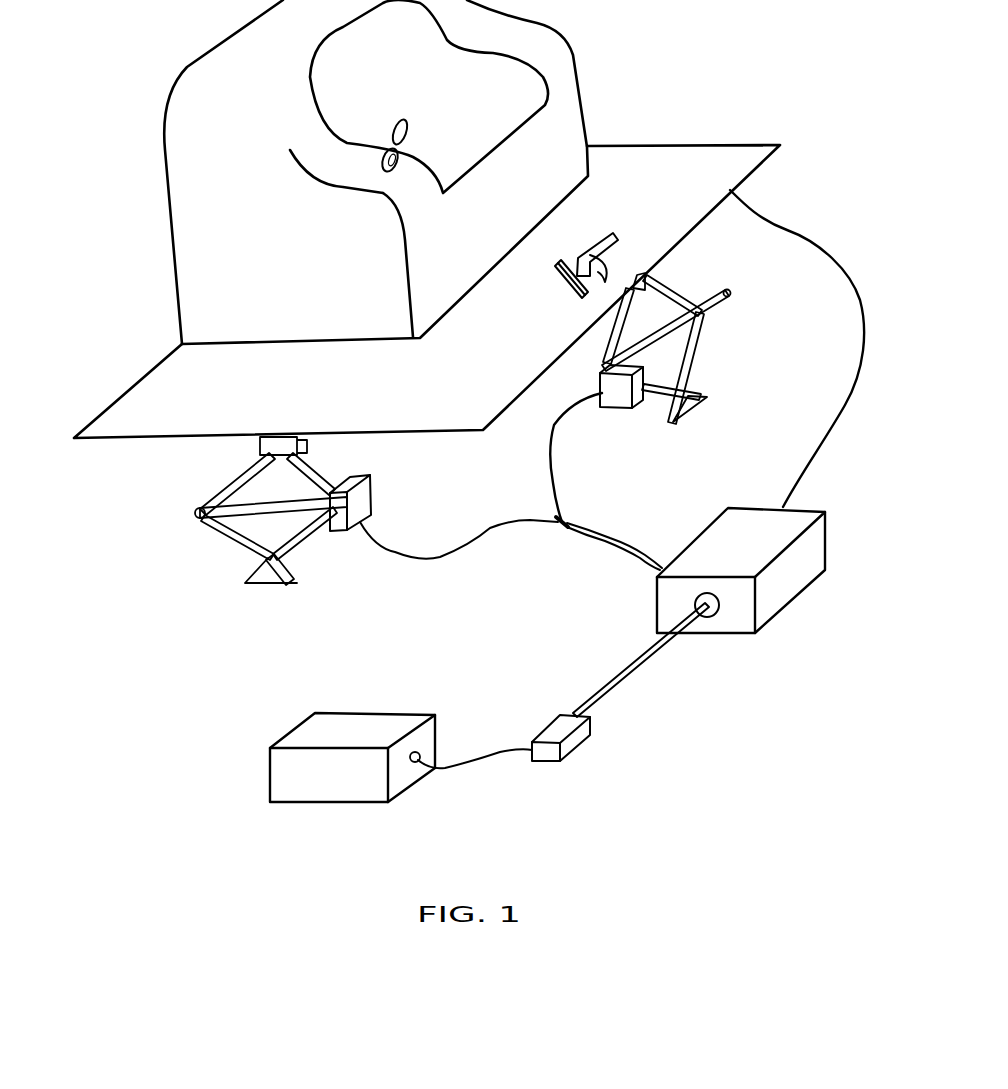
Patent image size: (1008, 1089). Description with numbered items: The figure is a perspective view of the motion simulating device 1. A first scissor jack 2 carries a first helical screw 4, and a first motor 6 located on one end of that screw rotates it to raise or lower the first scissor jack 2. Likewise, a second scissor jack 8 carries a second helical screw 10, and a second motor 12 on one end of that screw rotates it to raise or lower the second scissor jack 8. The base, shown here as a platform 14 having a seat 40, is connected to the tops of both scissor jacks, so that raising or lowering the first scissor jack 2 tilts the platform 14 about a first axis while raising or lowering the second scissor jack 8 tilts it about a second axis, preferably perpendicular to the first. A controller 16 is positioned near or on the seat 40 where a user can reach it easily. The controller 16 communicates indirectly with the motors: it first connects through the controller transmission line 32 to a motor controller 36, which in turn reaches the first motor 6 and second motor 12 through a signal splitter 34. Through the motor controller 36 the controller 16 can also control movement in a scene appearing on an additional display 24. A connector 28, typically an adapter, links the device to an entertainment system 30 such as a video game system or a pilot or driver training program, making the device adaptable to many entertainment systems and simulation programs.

The motion simulating device 1 is at (97, 152).
The first scissor jack 2 is at (280, 515).
The first helical screw 4 is at (288, 514).
The first motor 6 is at (363, 503).
The second scissor jack 8 is at (689, 366).
The second helical screw 10 is at (680, 337).
The second motor 12 is at (615, 400).
The platform 14 is at (85, 465).
The controller 16 is at (388, 170).
The additional display 24 is at (612, 240).
The connector 28 is at (577, 737).
The entertainment system 30 is at (343, 743).
The controller transmission line 32 is at (858, 373).
The signal splitter 34 is at (559, 530).
The motor controller 36 is at (803, 590).
The seat 40 is at (413, 96).